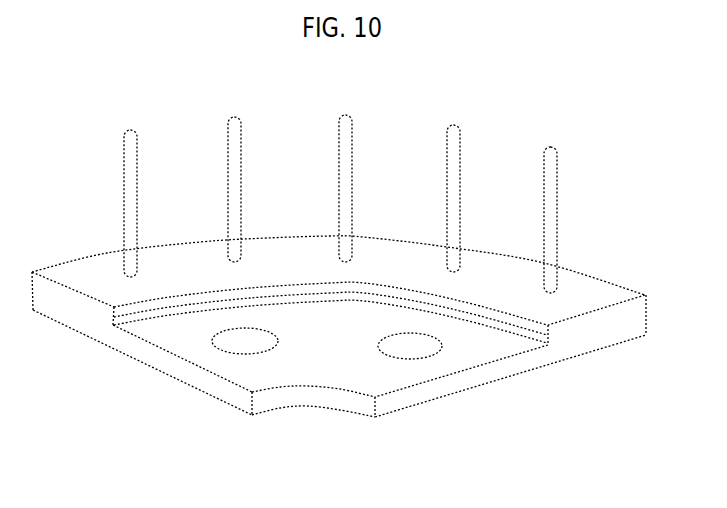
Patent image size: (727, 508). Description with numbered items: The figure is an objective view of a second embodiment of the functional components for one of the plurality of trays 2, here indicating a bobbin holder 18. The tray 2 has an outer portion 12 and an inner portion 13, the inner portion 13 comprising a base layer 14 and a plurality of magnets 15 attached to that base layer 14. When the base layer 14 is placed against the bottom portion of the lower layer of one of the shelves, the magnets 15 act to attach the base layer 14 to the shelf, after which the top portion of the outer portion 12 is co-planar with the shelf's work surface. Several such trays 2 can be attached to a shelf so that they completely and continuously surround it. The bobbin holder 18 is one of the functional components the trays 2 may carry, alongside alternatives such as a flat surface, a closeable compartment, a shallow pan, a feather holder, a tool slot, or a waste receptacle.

The tray 2 is at (675, 122).
The outer portion 12 is at (25, 310).
The inner portion 13 is at (339, 385).
The base layer 14 is at (549, 372).
The magnets 15 is at (268, 353).
The bobbin holder 18 is at (134, 235).